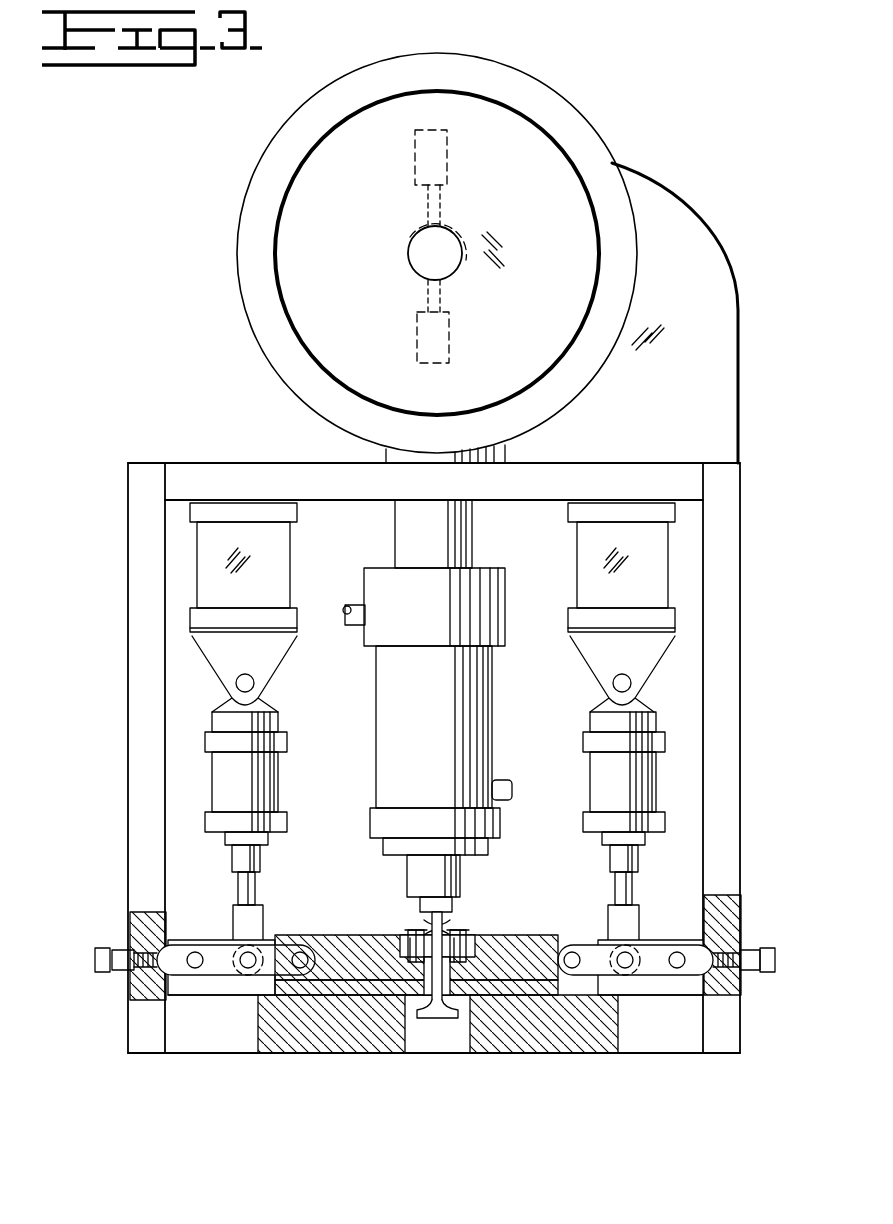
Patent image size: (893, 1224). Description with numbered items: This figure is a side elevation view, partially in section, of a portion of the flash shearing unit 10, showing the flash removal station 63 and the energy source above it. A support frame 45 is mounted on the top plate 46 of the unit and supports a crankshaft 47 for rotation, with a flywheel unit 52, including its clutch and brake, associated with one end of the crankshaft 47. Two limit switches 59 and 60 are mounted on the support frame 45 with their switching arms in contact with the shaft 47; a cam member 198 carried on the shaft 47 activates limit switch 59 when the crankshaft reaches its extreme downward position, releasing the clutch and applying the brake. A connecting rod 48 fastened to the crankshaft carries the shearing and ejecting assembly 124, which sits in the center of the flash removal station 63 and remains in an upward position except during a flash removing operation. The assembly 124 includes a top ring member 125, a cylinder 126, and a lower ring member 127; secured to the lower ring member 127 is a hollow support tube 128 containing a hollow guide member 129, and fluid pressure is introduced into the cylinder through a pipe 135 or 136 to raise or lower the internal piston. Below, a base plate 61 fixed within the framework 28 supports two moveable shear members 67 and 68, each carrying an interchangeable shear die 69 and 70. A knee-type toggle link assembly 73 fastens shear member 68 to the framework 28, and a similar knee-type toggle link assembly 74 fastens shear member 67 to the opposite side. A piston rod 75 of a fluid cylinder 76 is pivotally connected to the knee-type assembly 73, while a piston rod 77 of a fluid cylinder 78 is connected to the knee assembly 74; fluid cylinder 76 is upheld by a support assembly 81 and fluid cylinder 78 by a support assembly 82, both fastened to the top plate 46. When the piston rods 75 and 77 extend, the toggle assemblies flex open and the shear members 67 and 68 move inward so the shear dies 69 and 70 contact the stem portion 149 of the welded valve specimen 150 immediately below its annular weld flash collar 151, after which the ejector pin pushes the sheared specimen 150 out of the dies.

The flash shearing unit 10 is at (178, 340).
The framework 28 is at (130, 624).
The support frame 45 is at (738, 440).
The top plate 46 is at (185, 470).
The crankshaft 47 is at (418, 243).
The connecting rod 48 is at (386, 457).
The flywheel unit 52 is at (258, 136).
The limit switch 59 is at (438, 158).
The limit switch 60 is at (428, 330).
The base plate 61 is at (676, 1027).
The flash removal station 63 is at (345, 885).
The moveable shear member 67 is at (318, 990).
The moveable shear member 68 is at (540, 990).
The interchangeable shear die 69 is at (405, 935).
The interchangeable shear die 70 is at (466, 940).
The knee-type toggle link assembly 73 is at (688, 945).
The knee-type toggle link assembly 74 is at (208, 940).
The piston rod 75 is at (638, 858).
The fluid cylinder 76 is at (656, 775).
The piston rod 77 is at (235, 858).
The fluid cylinder 78 is at (212, 776).
The support assembly 81 is at (600, 540).
The support assembly 82 is at (215, 540).
The shearing and ejecting assembly 124 is at (419, 706).
The top ring member 125 is at (370, 580).
The cylinder 126 is at (418, 685).
The lower ring member 127 is at (380, 830).
The hollow support tube 128 is at (460, 870).
The hollow guide member 129 is at (420, 903).
The pipe 135 is at (350, 612).
The pipe 136 is at (520, 762).
The stem portion 149 is at (430, 980).
The welded valve specimen 150 is at (435, 1030).
The annular weld flash collar 151 is at (447, 925).
The cam member 198 is at (452, 235).